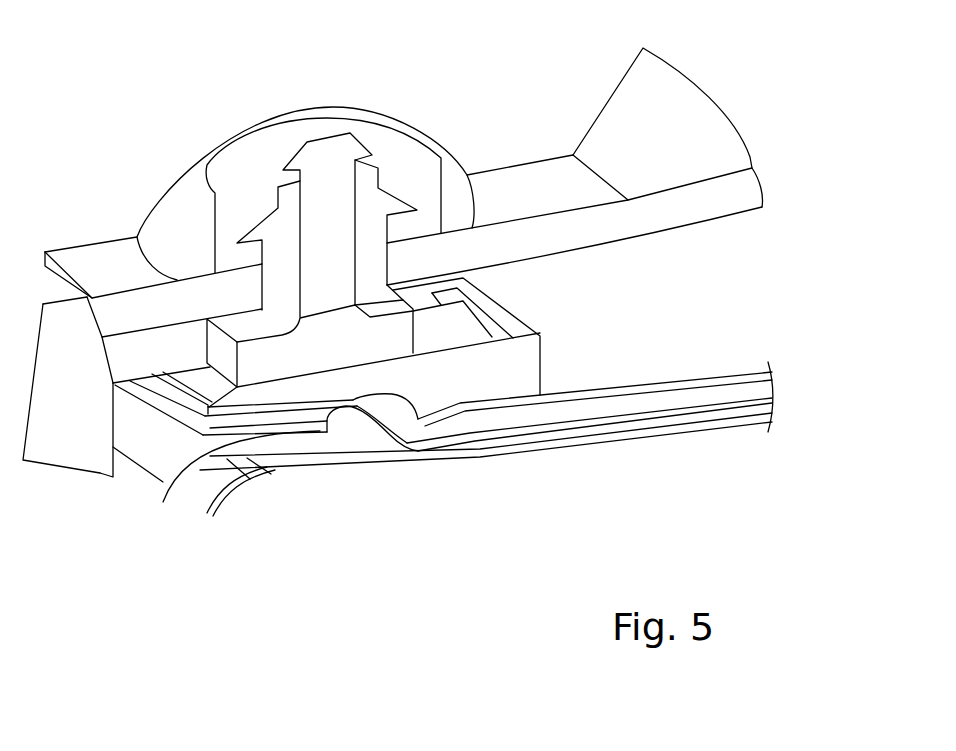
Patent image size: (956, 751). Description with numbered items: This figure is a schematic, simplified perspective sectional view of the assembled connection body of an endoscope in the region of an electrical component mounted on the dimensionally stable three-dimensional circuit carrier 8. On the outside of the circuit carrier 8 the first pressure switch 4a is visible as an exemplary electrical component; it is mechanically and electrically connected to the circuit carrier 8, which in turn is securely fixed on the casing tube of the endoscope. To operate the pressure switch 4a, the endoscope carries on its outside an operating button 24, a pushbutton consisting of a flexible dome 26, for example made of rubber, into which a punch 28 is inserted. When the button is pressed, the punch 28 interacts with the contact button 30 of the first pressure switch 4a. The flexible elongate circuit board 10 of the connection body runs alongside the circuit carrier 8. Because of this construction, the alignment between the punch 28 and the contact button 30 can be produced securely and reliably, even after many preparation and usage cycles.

The operating button 24 is at (390, 92).
The flexible dome 26 is at (262, 173).
The punch 28 is at (333, 153).
The contact button 30 is at (347, 317).
The first pressure switch 4a is at (263, 370).
The dimensionally stable three-dimensional circuit carrier 8 is at (487, 383).
The flexible elongate circuit board 10 is at (370, 427).